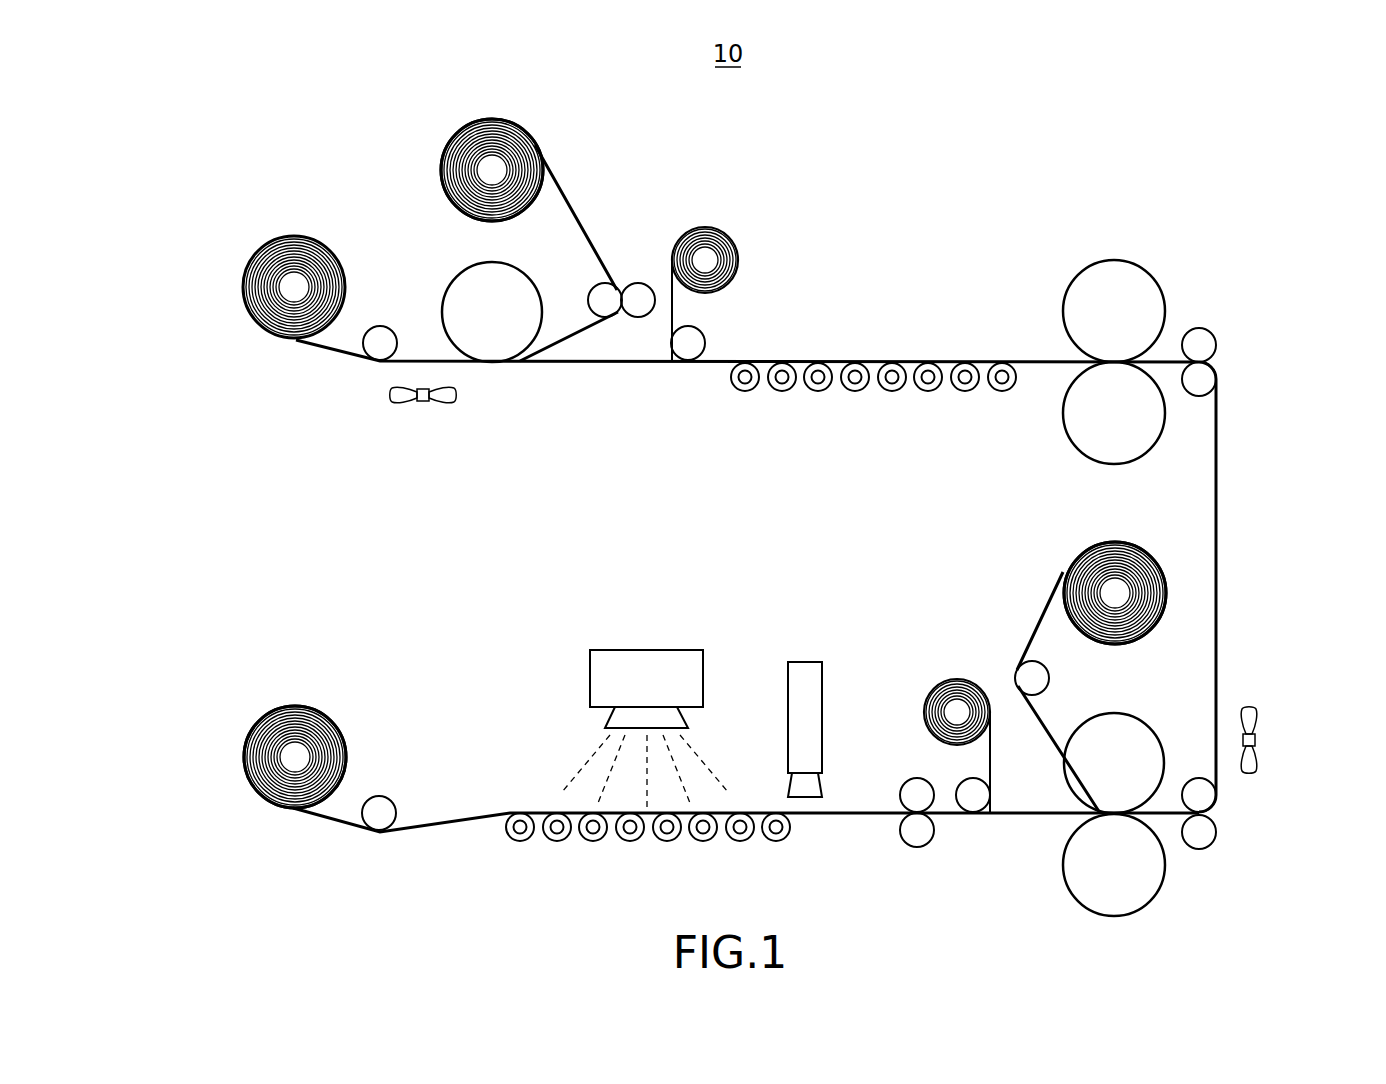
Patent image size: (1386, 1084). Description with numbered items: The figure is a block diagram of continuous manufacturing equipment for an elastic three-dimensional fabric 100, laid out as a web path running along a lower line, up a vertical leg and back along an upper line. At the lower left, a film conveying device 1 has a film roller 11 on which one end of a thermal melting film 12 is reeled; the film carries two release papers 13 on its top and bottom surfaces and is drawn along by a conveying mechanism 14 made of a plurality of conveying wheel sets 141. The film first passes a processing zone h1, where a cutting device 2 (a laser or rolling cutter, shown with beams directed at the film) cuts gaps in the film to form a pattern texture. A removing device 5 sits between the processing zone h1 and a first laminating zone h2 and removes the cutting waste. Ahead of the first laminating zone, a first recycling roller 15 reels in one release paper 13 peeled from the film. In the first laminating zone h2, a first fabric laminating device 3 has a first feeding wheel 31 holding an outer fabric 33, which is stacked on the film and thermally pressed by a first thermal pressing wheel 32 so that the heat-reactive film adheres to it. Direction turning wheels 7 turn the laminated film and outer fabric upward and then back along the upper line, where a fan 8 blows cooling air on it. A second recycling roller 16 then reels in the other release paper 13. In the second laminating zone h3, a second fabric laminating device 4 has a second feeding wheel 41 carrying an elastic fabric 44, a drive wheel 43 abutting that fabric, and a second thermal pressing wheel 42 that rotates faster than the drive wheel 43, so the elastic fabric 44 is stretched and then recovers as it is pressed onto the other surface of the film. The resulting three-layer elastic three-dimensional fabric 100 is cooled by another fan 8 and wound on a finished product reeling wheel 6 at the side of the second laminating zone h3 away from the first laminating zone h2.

The film conveying device 1 is at (272, 694).
The film roller 11 is at (246, 766).
The thermal melting film 12 is at (543, 812).
The release paper 13 is at (675, 300).
The conveying mechanism 14 is at (588, 848).
The conveying wheel sets 141 is at (855, 390).
The first recycling roller 15 is at (950, 684).
The second recycling roller 16 is at (740, 262).
The cutting device 2 is at (603, 678).
The first fabric laminating device 3 is at (1127, 514).
The first feeding wheel 31 is at (1088, 544).
The first thermal pressing wheel 32 is at (1120, 728).
The outer fabric 33 is at (1040, 614).
The second fabric laminating device 4 is at (470, 106).
The second feeding wheel 41 is at (446, 188).
The second thermal pressing wheel 42 is at (486, 272).
The drive wheel 43 is at (598, 292).
The elastic fabric 44 is at (582, 236).
The removing device 5 is at (792, 690).
The finished product reeling wheel 6 is at (276, 242).
The direction turning wheels 7 is at (1204, 376).
The fan 8 is at (418, 404).
The elastic three-dimensional fabric 100 is at (330, 352).
The processing zone h1 is at (672, 770).
The first laminating zone h2 is at (1108, 674).
The second laminating zone h3 is at (416, 330).